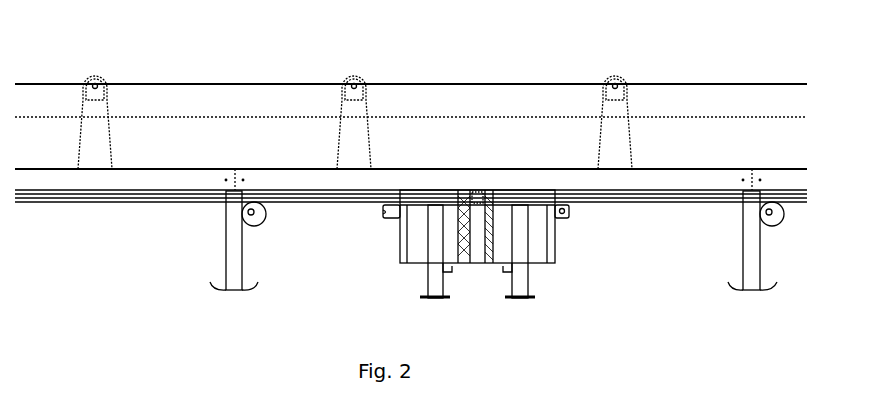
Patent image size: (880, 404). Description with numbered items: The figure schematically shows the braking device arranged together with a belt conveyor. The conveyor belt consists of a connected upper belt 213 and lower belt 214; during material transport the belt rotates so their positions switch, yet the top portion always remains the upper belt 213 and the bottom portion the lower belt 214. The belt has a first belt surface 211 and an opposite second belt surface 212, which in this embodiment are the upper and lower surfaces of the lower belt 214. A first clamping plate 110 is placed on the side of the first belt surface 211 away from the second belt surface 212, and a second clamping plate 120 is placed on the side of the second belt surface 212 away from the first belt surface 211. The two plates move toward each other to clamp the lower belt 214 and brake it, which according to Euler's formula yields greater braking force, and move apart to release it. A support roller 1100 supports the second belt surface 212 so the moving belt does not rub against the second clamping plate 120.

The first clamping plate 110 is at (544, 170).
The second clamping plate 120 is at (520, 206).
The support roller 1100 is at (558, 210).
The first belt surface 211 is at (163, 190).
The second belt surface 212 is at (138, 202).
The upper belt 213 is at (388, 102).
The lower belt 214 is at (316, 203).